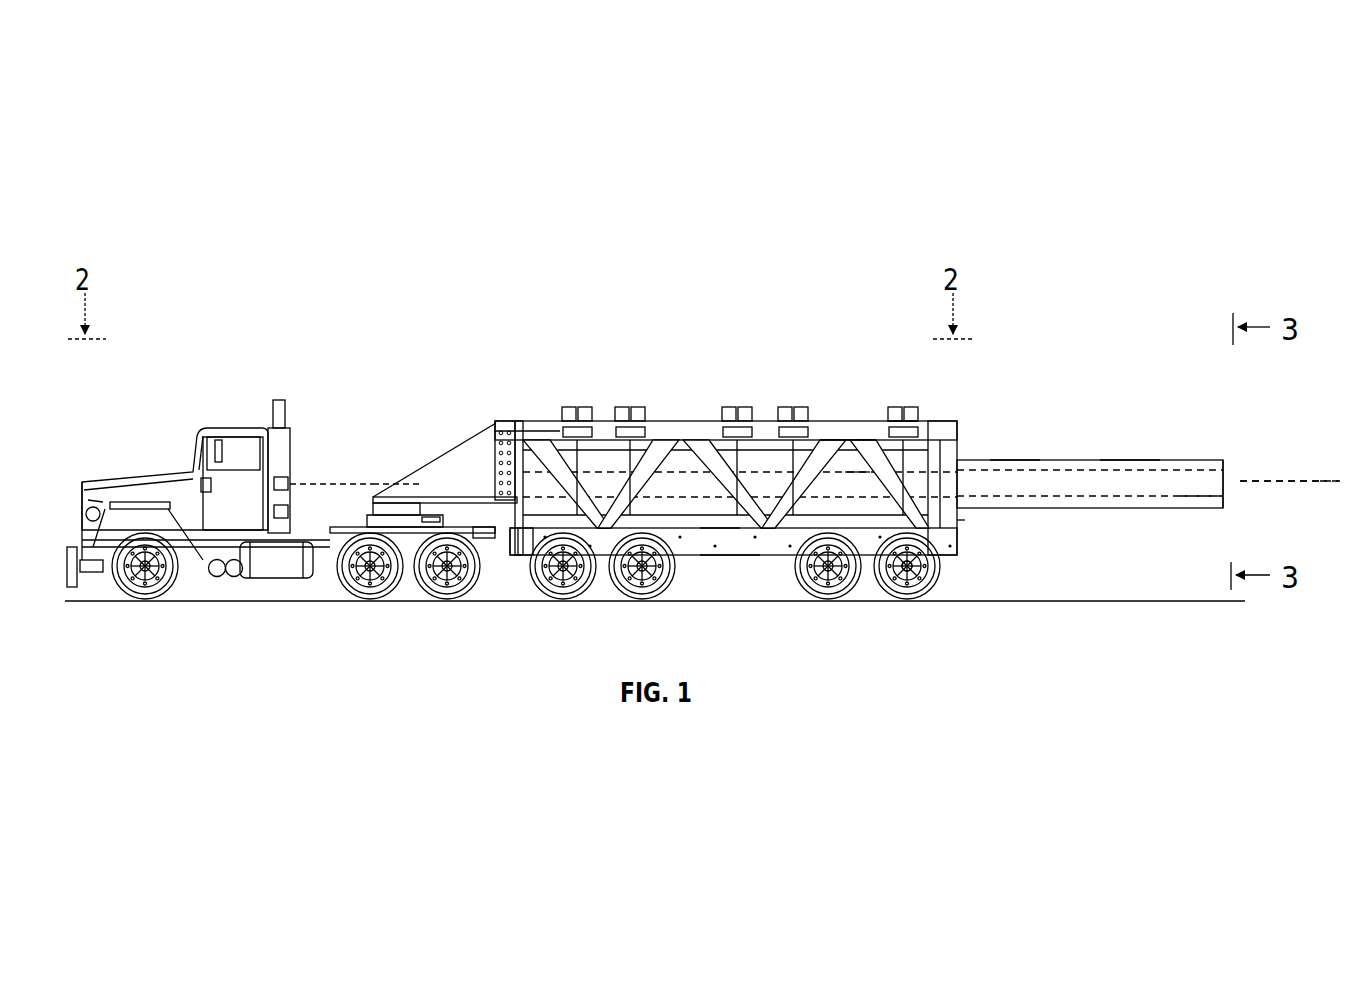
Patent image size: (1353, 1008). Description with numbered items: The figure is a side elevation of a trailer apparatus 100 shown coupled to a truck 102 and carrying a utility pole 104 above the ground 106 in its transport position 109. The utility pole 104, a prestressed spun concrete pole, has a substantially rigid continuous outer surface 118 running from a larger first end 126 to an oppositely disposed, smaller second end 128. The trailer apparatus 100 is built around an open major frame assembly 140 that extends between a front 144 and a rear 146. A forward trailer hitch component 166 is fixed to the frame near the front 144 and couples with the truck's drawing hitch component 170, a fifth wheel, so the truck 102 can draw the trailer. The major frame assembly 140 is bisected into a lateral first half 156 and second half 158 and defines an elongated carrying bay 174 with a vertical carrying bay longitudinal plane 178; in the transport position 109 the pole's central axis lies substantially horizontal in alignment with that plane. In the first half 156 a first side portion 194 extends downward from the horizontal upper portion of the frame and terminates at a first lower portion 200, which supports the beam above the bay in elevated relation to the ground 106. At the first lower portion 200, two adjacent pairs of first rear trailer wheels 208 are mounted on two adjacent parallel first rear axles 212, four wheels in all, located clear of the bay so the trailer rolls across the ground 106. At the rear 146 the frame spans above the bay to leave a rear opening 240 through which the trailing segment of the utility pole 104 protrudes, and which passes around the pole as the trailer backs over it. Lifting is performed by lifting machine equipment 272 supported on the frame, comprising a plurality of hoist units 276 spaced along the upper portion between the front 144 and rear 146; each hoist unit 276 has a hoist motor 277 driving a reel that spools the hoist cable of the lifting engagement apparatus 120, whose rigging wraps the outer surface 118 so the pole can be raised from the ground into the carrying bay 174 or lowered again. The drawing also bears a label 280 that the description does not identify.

The trailer apparatus 100 is at (745, 419).
The truck 102 is at (238, 424).
The utility pole 104 is at (1077, 455).
The ground 106 is at (1048, 597).
The transport position 109 is at (1137, 440).
The outer surface 118 is at (1016, 460).
The lifting engagement apparatus 120 is at (728, 432).
The first end 126 is at (520, 540).
The second end 128 is at (1232, 499).
The major frame assembly 140 is at (600, 405).
The front 144 is at (508, 417).
The rear 146 is at (978, 410).
The first half 156 is at (760, 550).
The second half 158 is at (847, 420).
The forward trailer hitch component 166 is at (398, 496).
The drawing hitch component 170 is at (403, 515).
The carrying bay 174 is at (766, 440).
The carrying bay longitudinal plane 178 is at (1292, 481).
The first side portion 194 is at (728, 487).
The first lower portion 200 is at (730, 560).
The first rear trailer wheel 208 is at (925, 590).
The first rear axle 212 is at (905, 570).
The rear opening 240 is at (963, 523).
The lifting machine equipment 272 is at (737, 461).
The hoist unit 276 is at (793, 461).
The hoist motor 277 is at (903, 461).
The tie-down 280 is at (633, 402).